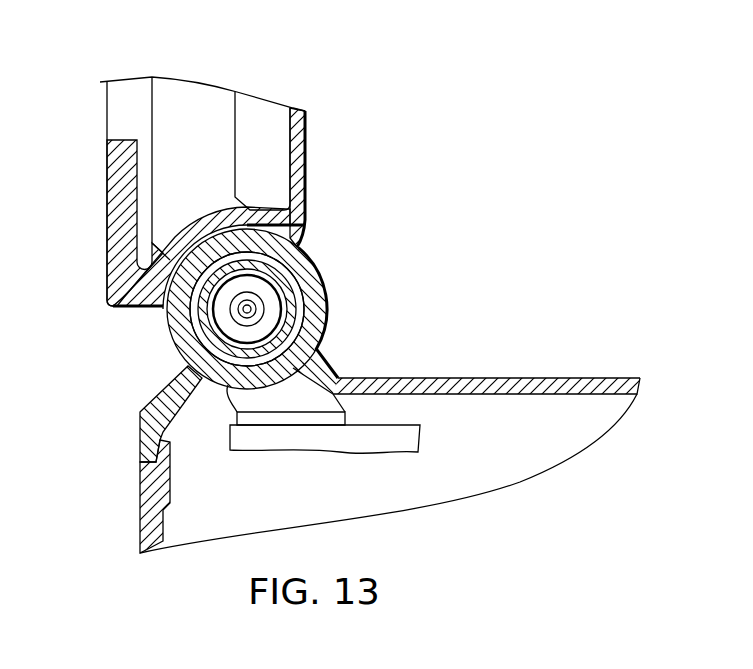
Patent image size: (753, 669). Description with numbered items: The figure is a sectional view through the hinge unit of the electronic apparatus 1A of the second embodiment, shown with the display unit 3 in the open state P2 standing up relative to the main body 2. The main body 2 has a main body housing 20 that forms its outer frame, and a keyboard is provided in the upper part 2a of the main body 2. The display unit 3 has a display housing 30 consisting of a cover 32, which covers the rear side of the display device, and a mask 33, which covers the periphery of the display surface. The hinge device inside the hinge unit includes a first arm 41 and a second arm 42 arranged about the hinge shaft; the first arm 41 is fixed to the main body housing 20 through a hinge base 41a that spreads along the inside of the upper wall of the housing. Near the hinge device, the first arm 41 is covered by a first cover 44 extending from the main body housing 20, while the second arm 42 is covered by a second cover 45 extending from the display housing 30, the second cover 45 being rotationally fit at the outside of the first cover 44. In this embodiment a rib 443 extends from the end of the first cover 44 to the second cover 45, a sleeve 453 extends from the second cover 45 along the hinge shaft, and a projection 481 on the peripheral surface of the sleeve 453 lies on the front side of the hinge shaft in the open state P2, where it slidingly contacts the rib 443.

The electronic apparatus 1A is at (567, 131).
The main body 2 is at (606, 378).
The upper part 2a is at (507, 379).
The display unit 3 is at (324, 103).
The main body housing 20 is at (140, 500).
The display housing 30 is at (98, 107).
The cover 32 is at (107, 217).
The mask 33 is at (308, 158).
The first arm 41 is at (281, 400).
The hinge base 41a is at (420, 435).
The second arm 42 is at (188, 100).
The first cover 44 is at (318, 328).
The rib 443 is at (200, 343).
The second cover 45 is at (297, 232).
The sleeve 453 is at (288, 268).
The projection 481 is at (280, 313).
The open state P2 is at (420, 185).